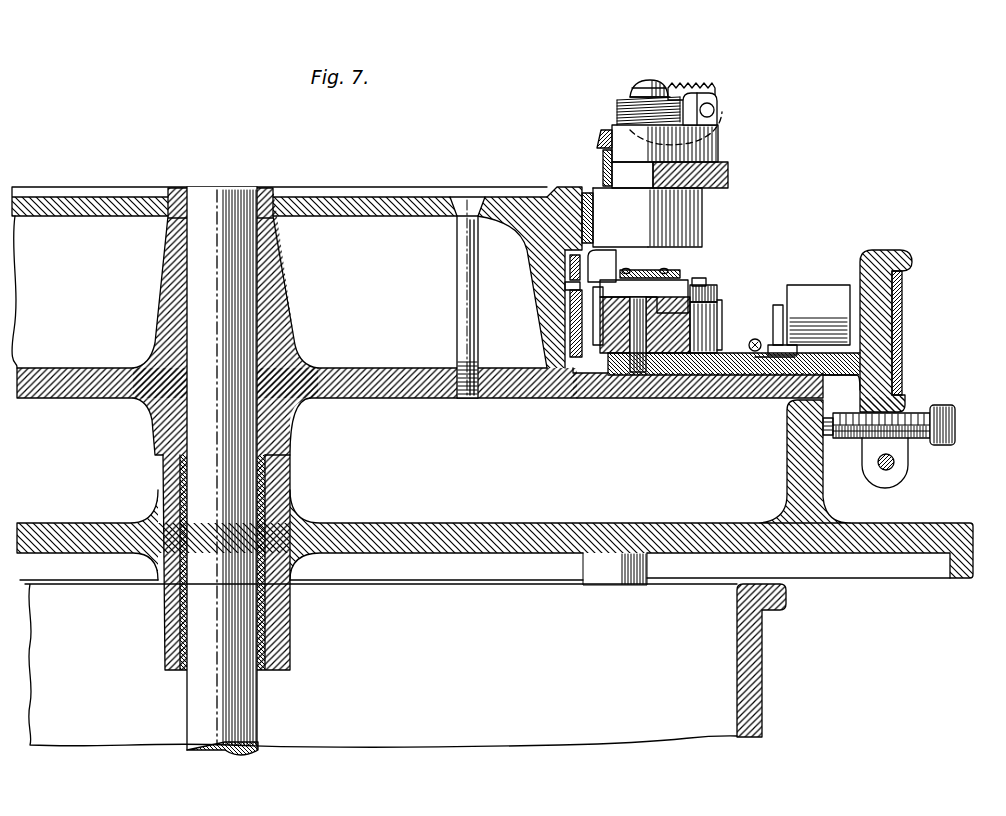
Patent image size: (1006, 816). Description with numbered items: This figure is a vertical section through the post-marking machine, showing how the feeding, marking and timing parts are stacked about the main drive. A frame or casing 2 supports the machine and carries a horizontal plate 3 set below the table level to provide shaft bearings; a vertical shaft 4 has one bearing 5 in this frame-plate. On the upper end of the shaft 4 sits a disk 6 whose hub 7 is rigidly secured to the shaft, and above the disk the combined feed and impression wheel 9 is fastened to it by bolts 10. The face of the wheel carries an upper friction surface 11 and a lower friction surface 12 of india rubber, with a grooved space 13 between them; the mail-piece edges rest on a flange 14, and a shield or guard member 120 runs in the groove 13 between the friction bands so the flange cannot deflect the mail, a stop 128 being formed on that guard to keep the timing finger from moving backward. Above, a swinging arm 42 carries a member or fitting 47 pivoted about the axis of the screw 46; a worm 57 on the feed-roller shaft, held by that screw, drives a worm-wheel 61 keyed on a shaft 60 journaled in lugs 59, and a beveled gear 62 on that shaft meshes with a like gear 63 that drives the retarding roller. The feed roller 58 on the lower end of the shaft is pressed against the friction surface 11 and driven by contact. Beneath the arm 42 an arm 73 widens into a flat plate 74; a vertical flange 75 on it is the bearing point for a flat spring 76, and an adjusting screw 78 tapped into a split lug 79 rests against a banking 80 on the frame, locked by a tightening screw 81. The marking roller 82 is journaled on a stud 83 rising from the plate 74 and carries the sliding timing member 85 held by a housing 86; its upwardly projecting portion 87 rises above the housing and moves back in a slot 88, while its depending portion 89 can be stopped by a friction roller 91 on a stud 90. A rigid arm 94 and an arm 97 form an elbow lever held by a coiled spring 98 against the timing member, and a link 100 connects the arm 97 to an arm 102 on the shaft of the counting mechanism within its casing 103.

The frame or casing 2 is at (758, 668).
The horizontal plate 3 is at (497, 523).
The vertical shaft 4 is at (245, 712).
The bearing 5 is at (292, 613).
The disk 6 is at (390, 389).
The hub 7 is at (160, 287).
The combined feed and impression wheel or roller 9 is at (279, 262).
The bolts 10 is at (456, 275).
The friction surface 11 is at (560, 192).
The friction surface 12 is at (596, 345).
The grooved space 13 is at (568, 263).
The flange 14 is at (716, 398).
The swinging arm 42 is at (730, 175).
The screw 46 is at (637, 86).
The irregular shaped member or fitting 47 is at (654, 135).
The worm 57 is at (617, 102).
The feed roller 58 is at (704, 215).
The lugs 59 is at (724, 118).
The shaft 60 is at (716, 98).
The worm-wheel 61 is at (692, 84).
The beveled gear 62 is at (650, 80).
The beveled gear 63 is at (599, 131).
The arm 73 is at (868, 395).
The flat horizontal plate 74 is at (753, 376).
The vertical flange 75 is at (882, 251).
The flat spring 76 is at (903, 331).
The adjusting screw 78 is at (937, 405).
The split lug 79 is at (911, 456).
The banking 80 is at (826, 465).
The tightening screw 81 is at (892, 469).
The marking roller 82 is at (678, 357).
The stud 83 is at (638, 375).
The sliding timing member 85 is at (686, 284).
The housing 86 is at (650, 271).
The upwardly projecting portion 87 is at (623, 246).
The slot 88 is at (616, 272).
The depending portion 89 is at (717, 291).
The stud 90 is at (718, 331).
The friction roller 91 is at (723, 309).
The rigid arm 94 is at (708, 284).
The arm 97 is at (766, 374).
The coiled spring 98 is at (756, 339).
The link 100 is at (776, 306).
The arm 102 is at (791, 285).
The casing 103 is at (818, 318).
The shield or guard member 120 is at (566, 287).
The stop 128 is at (566, 318).